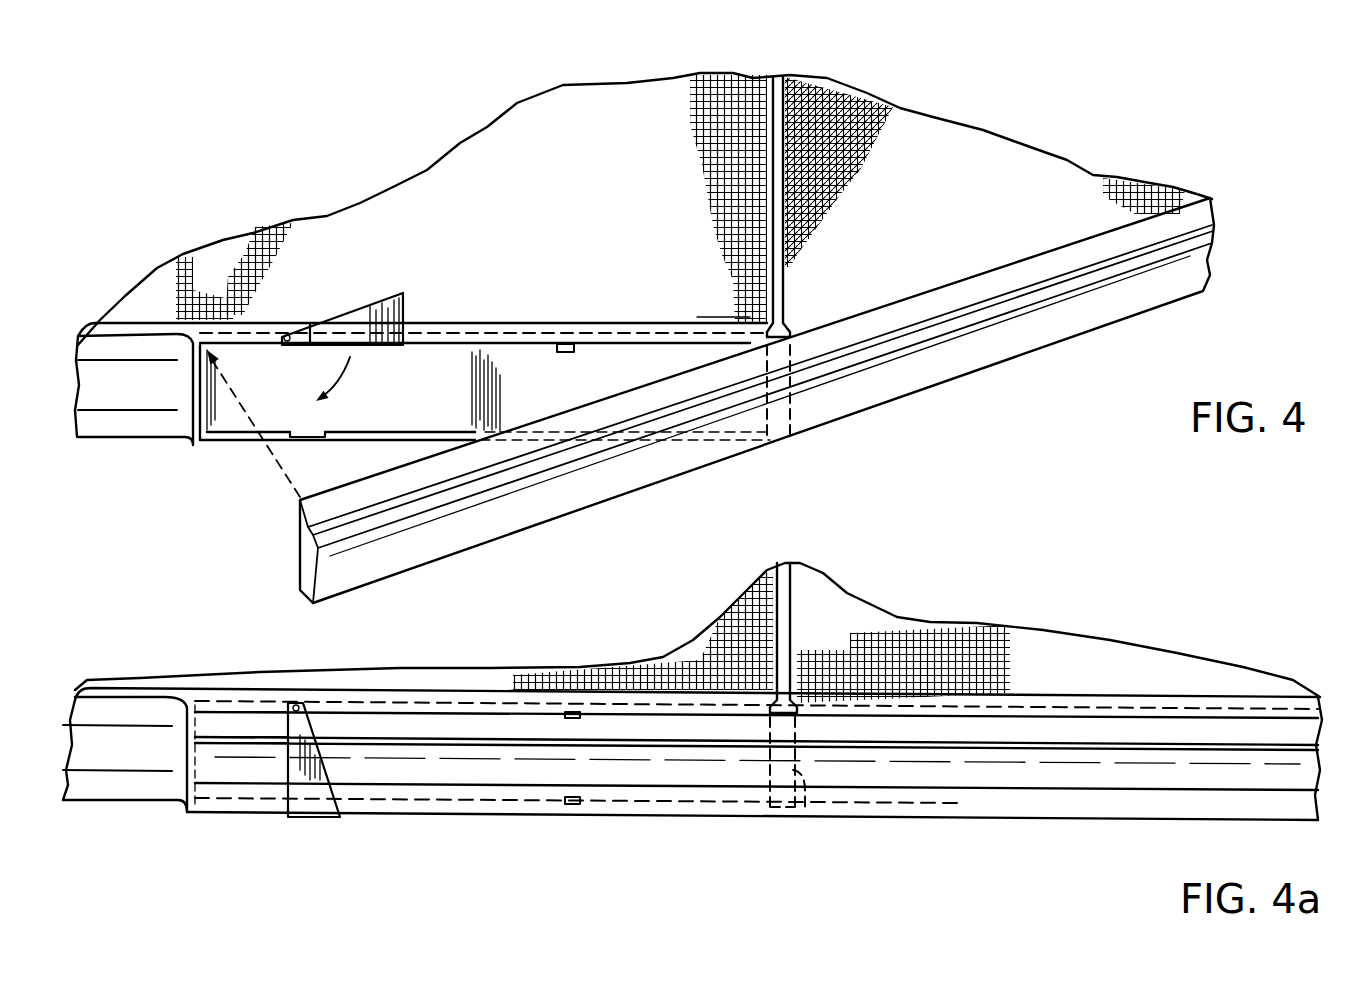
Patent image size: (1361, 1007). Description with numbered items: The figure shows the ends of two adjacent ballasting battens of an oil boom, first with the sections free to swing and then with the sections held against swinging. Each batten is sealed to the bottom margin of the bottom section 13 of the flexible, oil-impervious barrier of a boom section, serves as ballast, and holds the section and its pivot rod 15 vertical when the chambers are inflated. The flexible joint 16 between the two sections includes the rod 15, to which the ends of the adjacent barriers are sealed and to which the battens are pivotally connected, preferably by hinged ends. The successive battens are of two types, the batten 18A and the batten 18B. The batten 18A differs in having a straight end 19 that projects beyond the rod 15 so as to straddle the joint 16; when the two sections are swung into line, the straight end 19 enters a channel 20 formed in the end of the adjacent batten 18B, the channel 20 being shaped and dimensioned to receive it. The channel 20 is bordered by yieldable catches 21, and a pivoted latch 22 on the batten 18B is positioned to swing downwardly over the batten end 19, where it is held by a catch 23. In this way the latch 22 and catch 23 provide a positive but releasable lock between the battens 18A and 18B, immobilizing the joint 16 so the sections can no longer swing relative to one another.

In FIG. 4, the bottom section 13 is at (545, 172).
In FIG. 4A, the bottom section 13 is at (608, 670).
In FIG. 4, the pivot rod 15 is at (780, 273).
In FIG. 4A, the pivot rod 15 is at (780, 563).
In FIG. 4, the flexible joint 16 is at (790, 430).
In FIG. 4A, the flexible joint 16 is at (803, 817).
In FIG. 4, the batten 18A is at (1083, 318).
In FIG. 4A, the batten 18A is at (990, 803).
In FIG. 4, the batten 18B is at (103, 392).
In FIG. 4A, the batten 18B is at (115, 747).
In FIG. 4, the straight end 19 is at (757, 406).
In FIG. 4, the channel 20 is at (481, 410).
In FIG. 4, the yieldable catch 21 is at (566, 343).
In FIG. 4A, the yieldable catch 21 is at (572, 758).
In FIG. 4, the pivoted latch 22 is at (337, 323).
In FIG. 4A, the pivoted latch 22 is at (318, 755).
In FIG. 4, the catch 23 is at (295, 442).
In FIG. 4A, the catch 23 is at (312, 820).